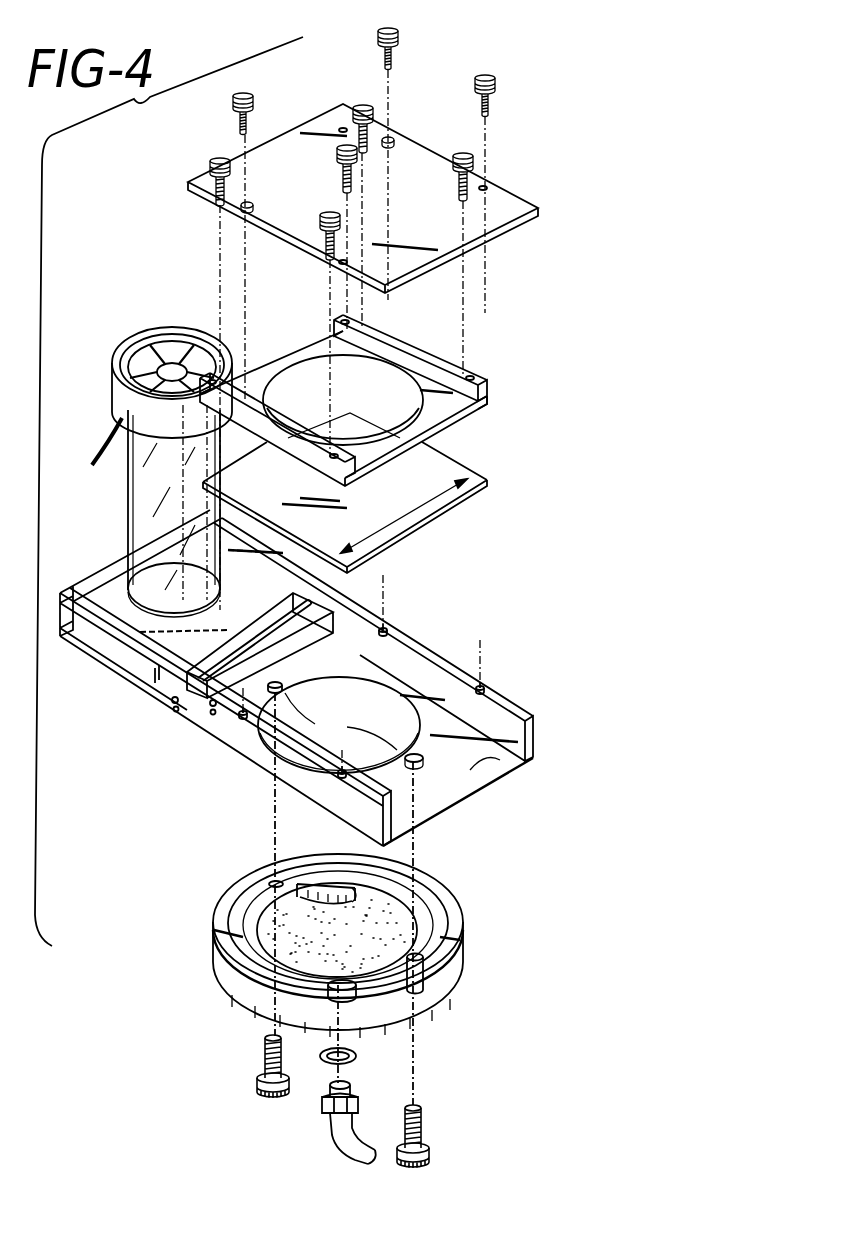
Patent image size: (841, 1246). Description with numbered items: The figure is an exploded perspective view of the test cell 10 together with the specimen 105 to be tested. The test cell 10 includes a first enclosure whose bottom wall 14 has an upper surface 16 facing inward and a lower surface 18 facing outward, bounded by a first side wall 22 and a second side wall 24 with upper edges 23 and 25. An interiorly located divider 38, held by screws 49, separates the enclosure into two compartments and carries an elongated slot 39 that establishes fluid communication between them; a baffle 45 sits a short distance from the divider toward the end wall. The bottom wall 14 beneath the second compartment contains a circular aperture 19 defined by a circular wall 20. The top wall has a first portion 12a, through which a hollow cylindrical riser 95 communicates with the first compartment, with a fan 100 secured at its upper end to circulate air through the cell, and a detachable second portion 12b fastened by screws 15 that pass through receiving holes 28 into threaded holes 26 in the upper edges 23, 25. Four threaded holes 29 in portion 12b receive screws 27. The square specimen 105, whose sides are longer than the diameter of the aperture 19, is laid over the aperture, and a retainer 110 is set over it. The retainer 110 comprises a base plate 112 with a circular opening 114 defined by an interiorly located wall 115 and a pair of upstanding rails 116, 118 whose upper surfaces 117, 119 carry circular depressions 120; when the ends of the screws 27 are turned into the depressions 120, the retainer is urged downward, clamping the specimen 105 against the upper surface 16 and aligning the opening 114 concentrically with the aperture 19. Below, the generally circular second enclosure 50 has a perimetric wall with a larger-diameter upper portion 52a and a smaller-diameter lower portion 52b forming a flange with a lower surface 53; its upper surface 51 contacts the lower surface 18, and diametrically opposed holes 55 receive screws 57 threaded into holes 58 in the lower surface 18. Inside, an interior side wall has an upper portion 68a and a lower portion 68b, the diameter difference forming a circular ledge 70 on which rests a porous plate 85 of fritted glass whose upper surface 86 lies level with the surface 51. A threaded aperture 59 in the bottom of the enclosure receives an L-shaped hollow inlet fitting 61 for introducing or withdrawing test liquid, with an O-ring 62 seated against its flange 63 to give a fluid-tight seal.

The test cell 10 is at (627, 103).
The first portion of top wall 12a is at (107, 590).
The second portion of top wall 12b is at (505, 210).
The bottom wall 14 is at (522, 793).
The screws 15 is at (484, 73).
The upper surface 16 is at (490, 758).
The lower surface 18 is at (483, 790).
The circular aperture 19 is at (322, 712).
The circular wall 20 is at (402, 688).
The first side wall 22 is at (545, 738).
The upper edge 23 is at (515, 703).
The second side wall 24 is at (405, 835).
The upper edge 25 is at (423, 817).
The threaded holes 26 is at (480, 685).
The screws 27 is at (463, 150).
The receiving holes 28 is at (388, 146).
The threaded holes 29 is at (343, 127).
The divider 38 is at (335, 603).
The slot 39 is at (212, 708).
The baffle 45 is at (118, 688).
The screws 49 is at (175, 710).
The second enclosure 50 is at (482, 900).
The upper surface 51 is at (247, 898).
The upper portion of perimetric wall 52a is at (220, 965).
The lower portion of perimetric wall 52b is at (243, 1000).
The lower surface 53 is at (265, 1012).
The holes 55 is at (276, 882).
The screws 57 is at (265, 1052).
The threaded holes 58 is at (392, 748).
The threaded aperture 59 is at (350, 998).
The inlet fitting 61 is at (340, 1152).
The O-ring 62 is at (357, 1060).
The flange 63 is at (323, 1103).
The upper portion of interior side wall 68a is at (305, 882).
The lower portion of interior side wall 68b is at (348, 895).
The circular ledge 70 is at (350, 884).
The porous plate 85 is at (300, 932).
The upper surface 86 is at (398, 933).
The riser 95 is at (140, 490).
The fan 100 is at (148, 338).
The specimen 105 is at (487, 503).
The retainer 110 is at (503, 380).
The base plate 112 is at (458, 408).
The circular opening 114 is at (335, 405).
The interiorly located wall 115 is at (313, 353).
The rail 116 is at (330, 472).
The upper surface 117 is at (243, 383).
The rail 118 is at (497, 398).
The upper surface 119 is at (470, 372).
The circular depressions 120 is at (467, 372).